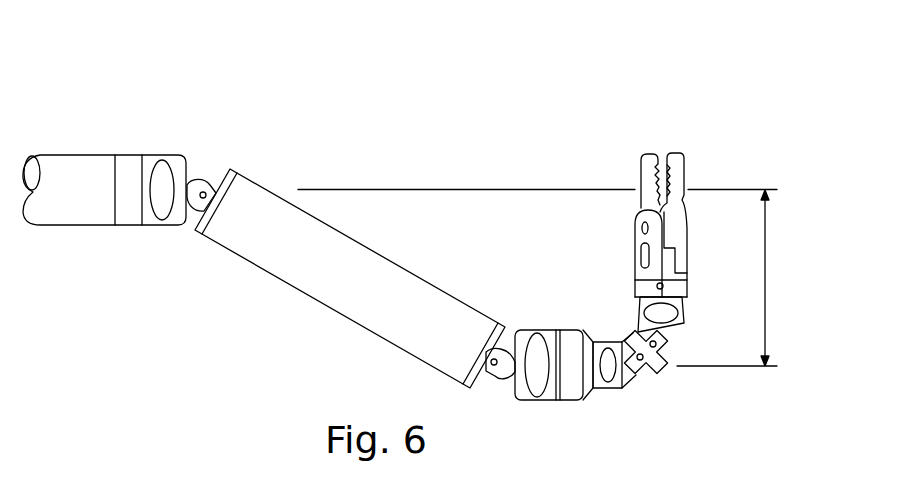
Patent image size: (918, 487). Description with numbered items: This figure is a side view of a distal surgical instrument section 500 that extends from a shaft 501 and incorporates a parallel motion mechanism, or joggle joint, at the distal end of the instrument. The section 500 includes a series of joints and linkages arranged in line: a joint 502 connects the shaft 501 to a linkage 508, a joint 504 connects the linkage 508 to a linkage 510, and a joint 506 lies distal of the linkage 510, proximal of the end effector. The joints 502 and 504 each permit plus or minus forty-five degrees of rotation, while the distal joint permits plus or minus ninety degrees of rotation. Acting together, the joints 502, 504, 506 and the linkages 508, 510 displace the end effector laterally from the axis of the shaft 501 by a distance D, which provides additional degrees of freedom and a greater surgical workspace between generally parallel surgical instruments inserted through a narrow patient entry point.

The distal surgical instrument section 500 is at (602, 66).
The shaft 501 is at (86, 155).
The joint 502 is at (200, 183).
The joint 504 is at (497, 383).
The joint 506 is at (634, 250).
The linkage 508 is at (330, 308).
The linkage 510 is at (572, 400).